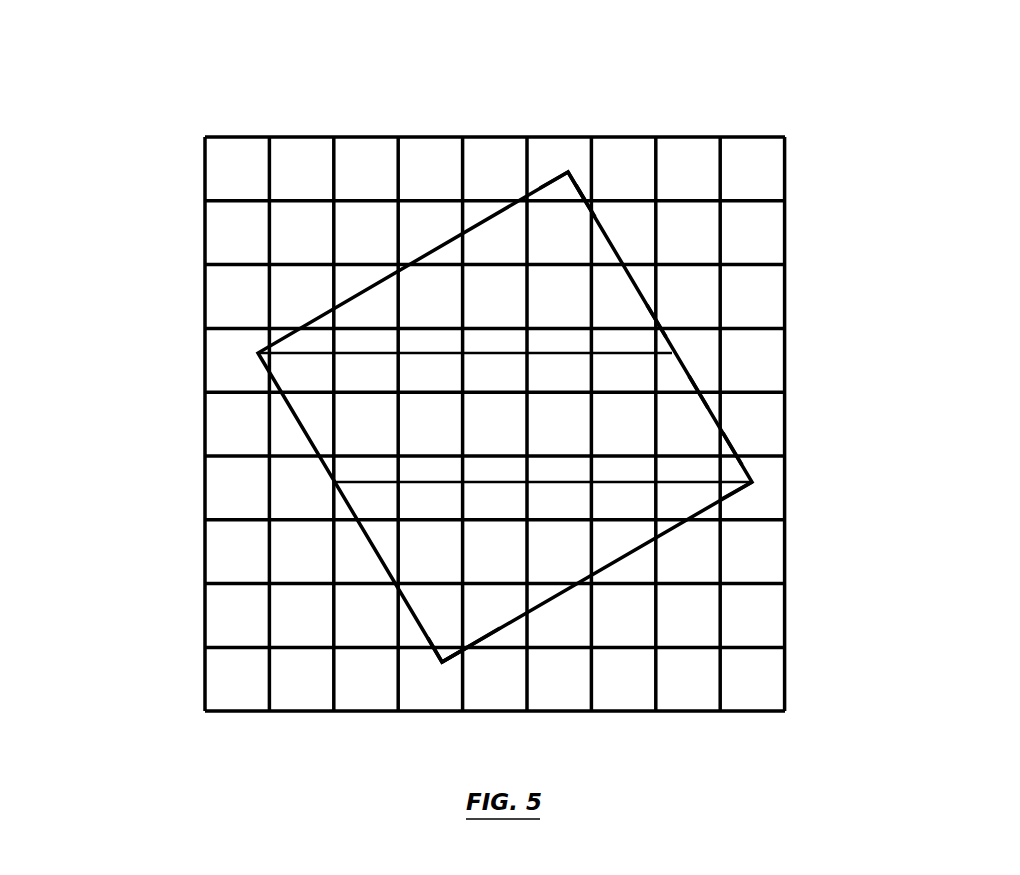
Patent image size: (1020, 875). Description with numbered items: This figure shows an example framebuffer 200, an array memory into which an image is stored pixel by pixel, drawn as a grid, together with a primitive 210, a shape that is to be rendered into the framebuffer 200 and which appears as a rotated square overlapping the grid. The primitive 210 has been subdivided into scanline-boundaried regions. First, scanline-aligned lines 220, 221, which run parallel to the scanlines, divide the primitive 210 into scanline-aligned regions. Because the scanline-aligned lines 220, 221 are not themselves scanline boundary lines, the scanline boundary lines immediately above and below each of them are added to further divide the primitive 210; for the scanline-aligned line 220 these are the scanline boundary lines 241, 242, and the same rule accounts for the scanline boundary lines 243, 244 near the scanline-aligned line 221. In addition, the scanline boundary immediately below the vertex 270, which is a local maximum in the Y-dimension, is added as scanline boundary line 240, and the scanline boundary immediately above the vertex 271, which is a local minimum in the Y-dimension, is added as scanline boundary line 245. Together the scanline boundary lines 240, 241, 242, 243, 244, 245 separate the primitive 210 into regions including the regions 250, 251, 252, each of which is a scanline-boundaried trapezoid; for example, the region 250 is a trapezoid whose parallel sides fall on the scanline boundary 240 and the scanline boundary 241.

The framebuffer 200 is at (410, 137).
The primitive 210 is at (540, 188).
The vertex 270 is at (568, 172).
The vertex 271 is at (445, 665).
The scanline-aligned line 220 is at (292, 338).
The scanline-aligned line 221 is at (385, 483).
The scanline boundary line 240 is at (585, 195).
The scanline boundary line 241 is at (637, 328).
The scanline boundary line 242 is at (660, 392).
The scanline boundary line 243 is at (663, 455).
The scanline boundary line 244 is at (663, 515).
The scanline boundary line 245 is at (465, 650).
The region 250 is at (526, 299).
The region 251 is at (526, 438).
The region 252 is at (526, 571).